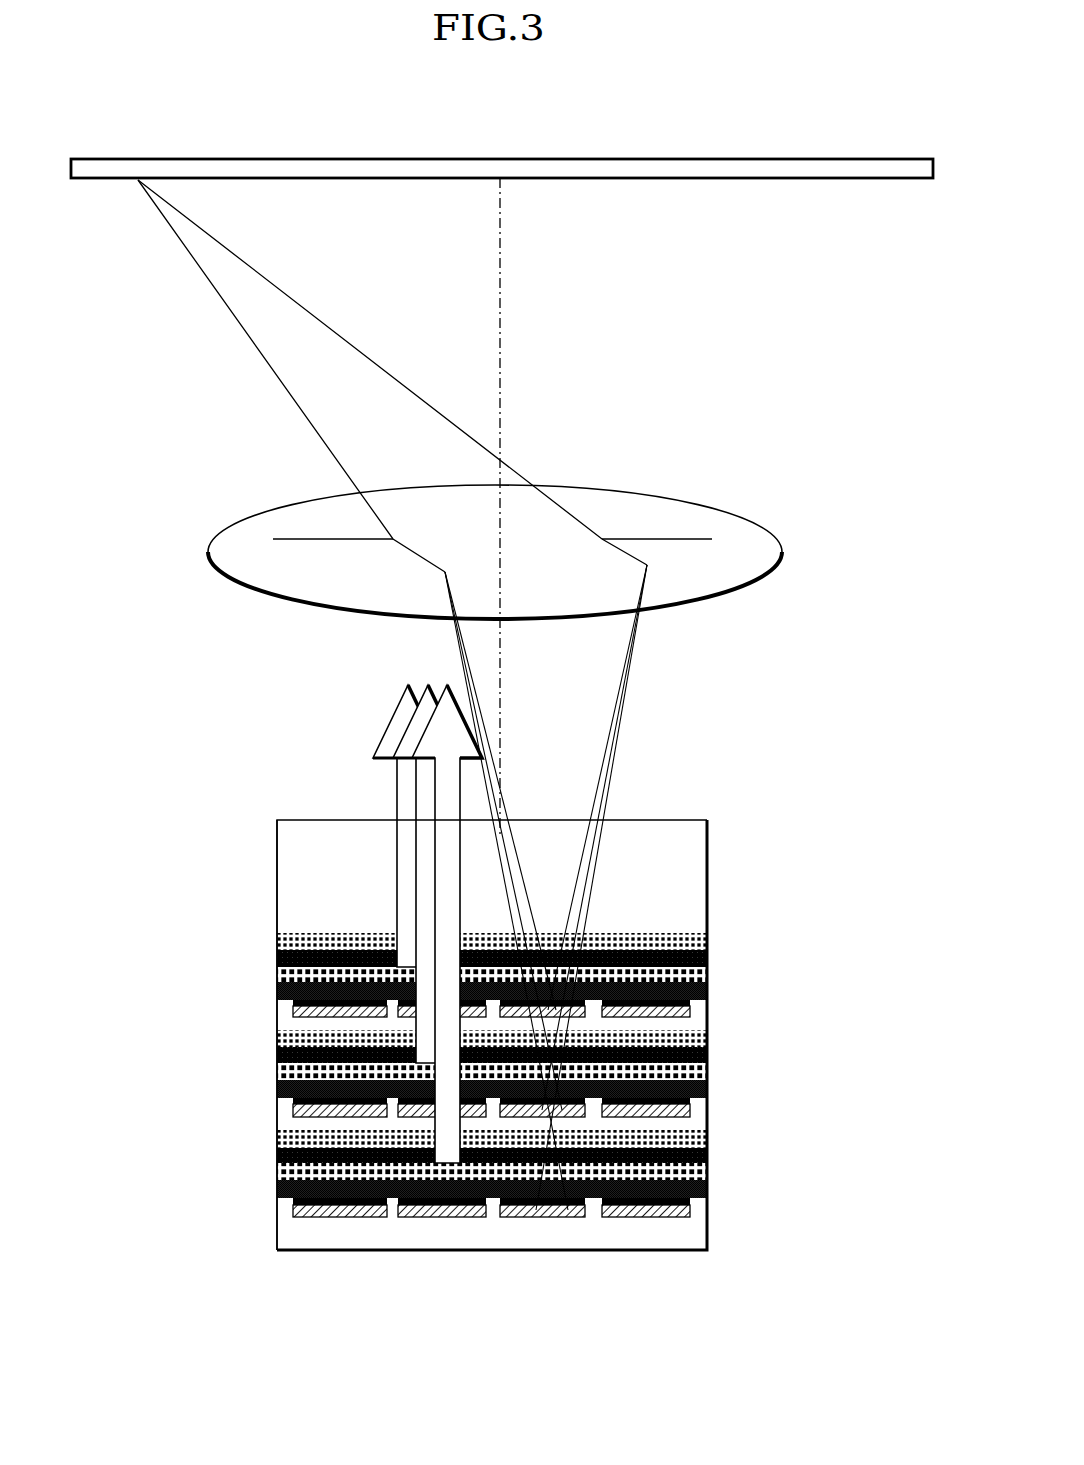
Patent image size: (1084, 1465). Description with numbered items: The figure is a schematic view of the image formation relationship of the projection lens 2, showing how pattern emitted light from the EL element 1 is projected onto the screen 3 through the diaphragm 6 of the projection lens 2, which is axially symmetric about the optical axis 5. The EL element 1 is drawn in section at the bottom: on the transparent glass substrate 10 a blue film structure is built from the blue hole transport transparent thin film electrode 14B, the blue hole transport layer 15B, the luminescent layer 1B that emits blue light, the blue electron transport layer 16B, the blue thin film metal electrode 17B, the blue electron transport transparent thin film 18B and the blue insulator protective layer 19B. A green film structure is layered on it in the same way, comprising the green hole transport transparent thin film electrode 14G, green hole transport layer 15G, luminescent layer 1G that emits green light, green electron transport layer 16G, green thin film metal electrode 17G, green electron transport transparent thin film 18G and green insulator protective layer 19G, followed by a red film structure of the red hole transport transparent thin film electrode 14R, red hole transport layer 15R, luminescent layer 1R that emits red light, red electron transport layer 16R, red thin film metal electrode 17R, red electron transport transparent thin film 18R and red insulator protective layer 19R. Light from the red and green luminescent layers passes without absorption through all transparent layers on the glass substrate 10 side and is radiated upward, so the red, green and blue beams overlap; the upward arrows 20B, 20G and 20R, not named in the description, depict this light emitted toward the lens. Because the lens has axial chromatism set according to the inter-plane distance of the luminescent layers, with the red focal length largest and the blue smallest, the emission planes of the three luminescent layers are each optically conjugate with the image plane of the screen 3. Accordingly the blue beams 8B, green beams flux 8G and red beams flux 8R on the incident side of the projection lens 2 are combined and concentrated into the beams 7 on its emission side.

The EL element 1 is at (265, 855).
The projection lens 2 is at (663, 500).
The screen 3 is at (623, 165).
The optical axis 5 is at (504, 289).
The diaphragm 6 is at (704, 540).
The beams 7 is at (268, 341).
The blue beams 8B is at (640, 660).
The green beams flux 8G is at (625, 700).
The red beams flux 8R is at (606, 745).
The transparent glass substrate 10 is at (680, 822).
The blue hole transport transparent thin film electrode 14B is at (688, 928).
The blue hole transport layer 15B is at (707, 955).
The luminescent layer that emits blue light 1B is at (707, 975).
The blue electron transport layer 16B is at (707, 991).
The blue thin film metal electrode 17B is at (295, 1003).
The blue electron transport transparent thin film 18B is at (295, 1012).
The blue insulator protective layer 19B is at (707, 1023).
The green hole transport transparent thin film electrode 14G is at (707, 1040).
The green hole transport layer 15G is at (707, 1053).
The luminescent layer that emits green light 1G is at (707, 1070).
The green electron transport layer 16G is at (707, 1088).
The green thin film metal electrode 17G is at (295, 1102).
The green electron transport transparent thin film 18G is at (295, 1112).
The green insulator protective layer 19G is at (707, 1122).
The red hole transport transparent thin film electrode 14R is at (707, 1138).
The red hole transport layer 15R is at (707, 1153).
The luminescent layer that emits red light 1R is at (707, 1170).
The red electron transport layer 16R is at (707, 1188).
The red thin film metal electrode 17R is at (295, 1204).
The red electron transport transparent thin film 18R is at (295, 1218).
The red insulator protective layer 19R is at (283, 1252).
The blue emitted light 20B is at (403, 778).
The green emitted light 20G is at (425, 801).
The red emitted light 20R is at (445, 840).